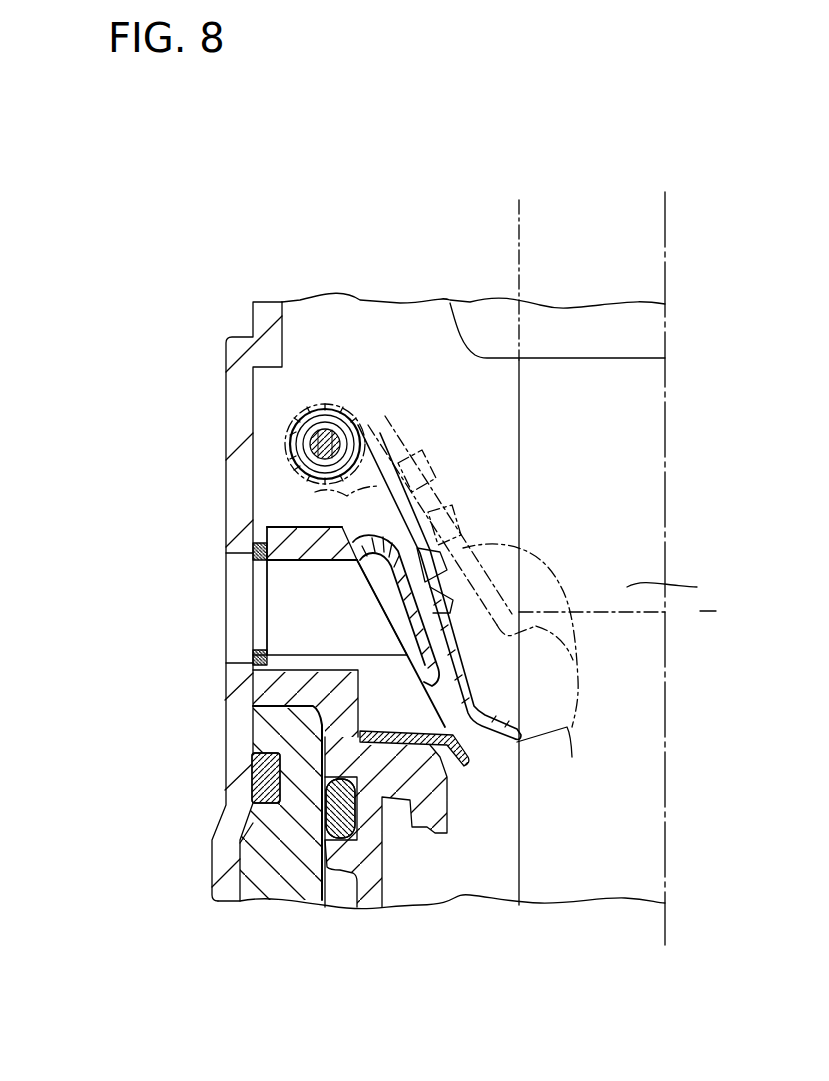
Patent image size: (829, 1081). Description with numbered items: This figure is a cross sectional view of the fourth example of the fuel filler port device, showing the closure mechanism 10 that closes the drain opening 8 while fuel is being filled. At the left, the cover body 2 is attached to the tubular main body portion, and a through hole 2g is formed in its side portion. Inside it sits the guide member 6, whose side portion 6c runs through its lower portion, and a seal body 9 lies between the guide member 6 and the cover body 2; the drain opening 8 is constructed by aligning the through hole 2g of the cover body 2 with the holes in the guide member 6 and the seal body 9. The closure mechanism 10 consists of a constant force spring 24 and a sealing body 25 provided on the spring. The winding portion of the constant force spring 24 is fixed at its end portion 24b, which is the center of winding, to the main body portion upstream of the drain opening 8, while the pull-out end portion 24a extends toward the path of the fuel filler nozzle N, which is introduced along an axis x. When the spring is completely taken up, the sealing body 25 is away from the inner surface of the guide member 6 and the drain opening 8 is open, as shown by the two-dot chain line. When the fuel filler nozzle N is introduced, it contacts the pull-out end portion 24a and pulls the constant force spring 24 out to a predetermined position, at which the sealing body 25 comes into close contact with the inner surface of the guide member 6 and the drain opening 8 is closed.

The cover body 2 is at (257, 318).
The through hole 2g is at (237, 583).
The guide member 6 is at (345, 527).
The side portion 6c is at (270, 527).
The drain opening 8 is at (237, 612).
The seal body 9 is at (258, 522).
The closure mechanism 10 is at (420, 378).
The constant force spring 24 is at (450, 633).
The pull-out end portion 24a is at (550, 670).
The end portion 24b is at (326, 410).
The sealing body 25 is at (538, 543).
The axis x is at (667, 215).
The fuel filler nozzle N is at (647, 667).